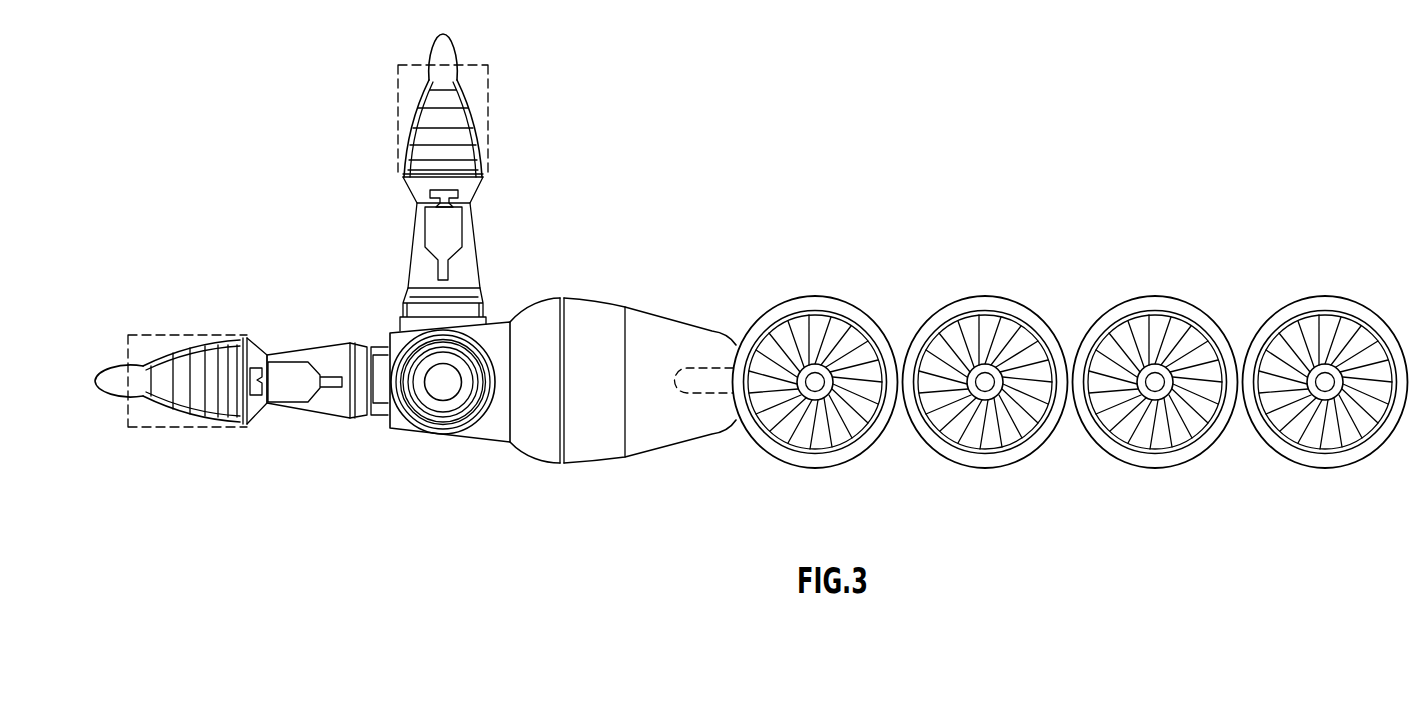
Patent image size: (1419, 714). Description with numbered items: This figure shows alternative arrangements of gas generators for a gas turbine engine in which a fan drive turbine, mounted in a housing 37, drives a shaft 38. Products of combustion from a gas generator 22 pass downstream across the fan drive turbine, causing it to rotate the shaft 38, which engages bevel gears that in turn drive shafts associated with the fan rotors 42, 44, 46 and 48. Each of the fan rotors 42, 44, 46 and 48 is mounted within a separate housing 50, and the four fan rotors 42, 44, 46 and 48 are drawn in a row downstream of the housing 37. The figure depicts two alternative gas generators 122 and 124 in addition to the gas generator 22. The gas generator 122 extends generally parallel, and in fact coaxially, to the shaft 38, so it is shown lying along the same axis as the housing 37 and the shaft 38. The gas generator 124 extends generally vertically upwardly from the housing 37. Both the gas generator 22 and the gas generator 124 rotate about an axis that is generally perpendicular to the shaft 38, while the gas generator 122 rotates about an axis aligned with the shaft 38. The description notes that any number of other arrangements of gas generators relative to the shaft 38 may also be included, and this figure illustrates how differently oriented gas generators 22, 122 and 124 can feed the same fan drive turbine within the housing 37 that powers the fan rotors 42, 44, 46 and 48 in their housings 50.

The gas generator 22 is at (440, 387).
The housing 37 is at (597, 337).
The shaft 38 is at (690, 368).
The fan rotor 42 is at (846, 337).
The fan rotor 44 is at (1016, 337).
The fan rotor 46 is at (1186, 337).
The fan rotor 48 is at (1356, 337).
The housing 50 is at (789, 307).
The gas generator 122 is at (307, 352).
The gas generator 124 is at (470, 240).